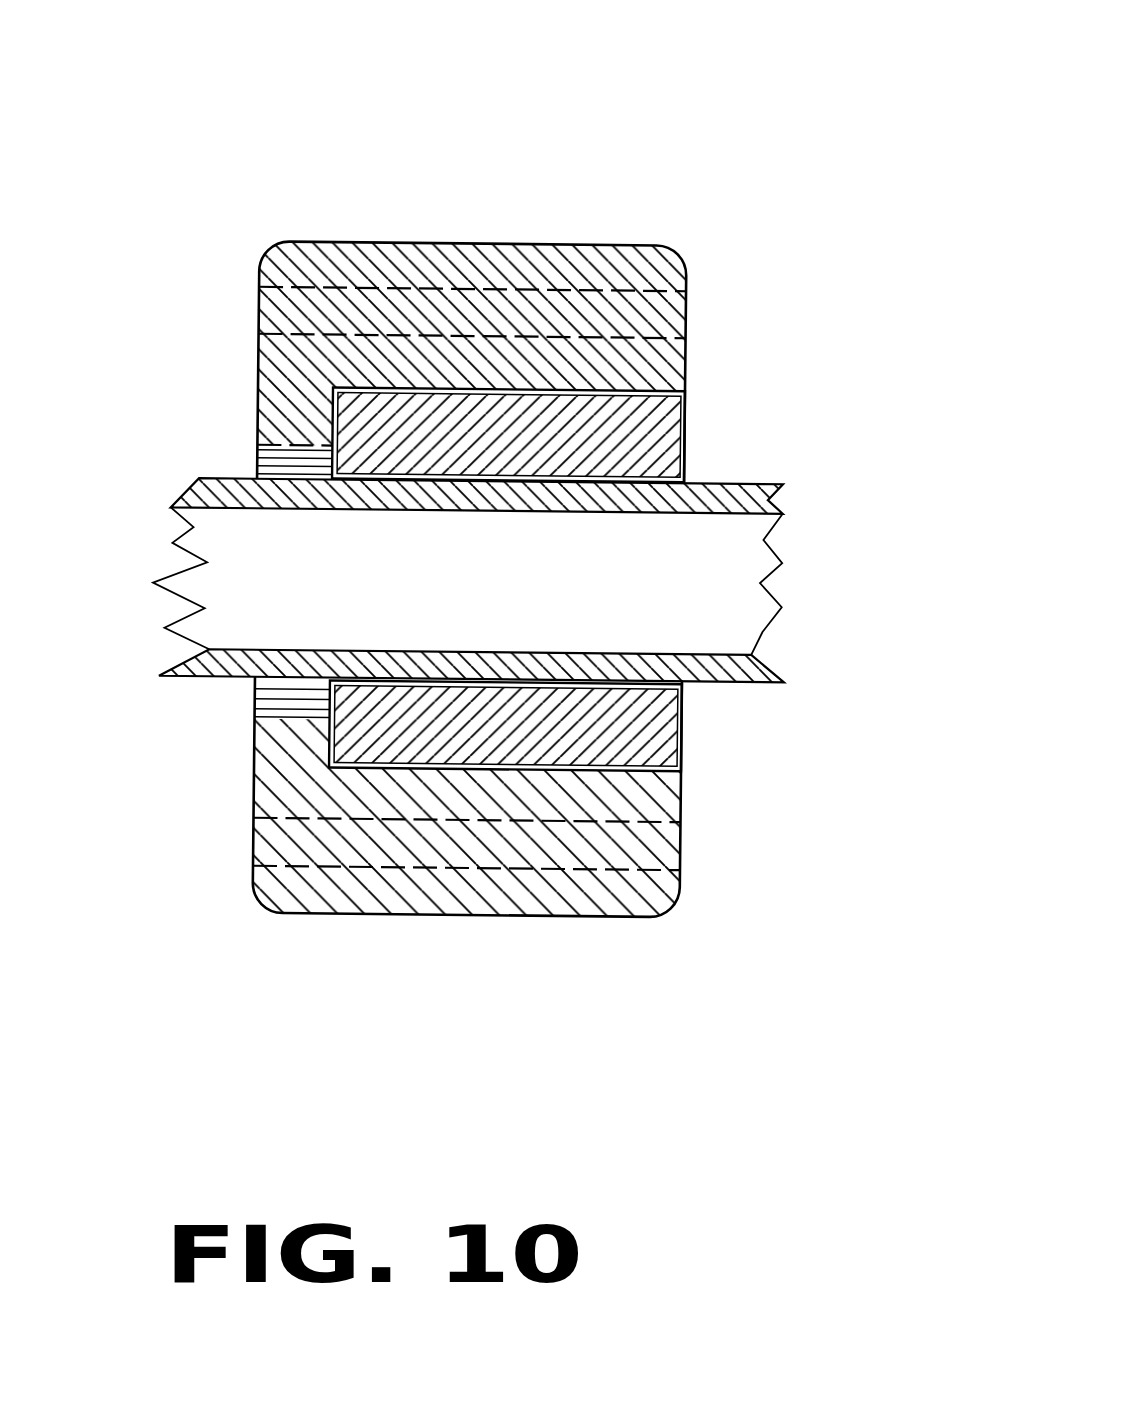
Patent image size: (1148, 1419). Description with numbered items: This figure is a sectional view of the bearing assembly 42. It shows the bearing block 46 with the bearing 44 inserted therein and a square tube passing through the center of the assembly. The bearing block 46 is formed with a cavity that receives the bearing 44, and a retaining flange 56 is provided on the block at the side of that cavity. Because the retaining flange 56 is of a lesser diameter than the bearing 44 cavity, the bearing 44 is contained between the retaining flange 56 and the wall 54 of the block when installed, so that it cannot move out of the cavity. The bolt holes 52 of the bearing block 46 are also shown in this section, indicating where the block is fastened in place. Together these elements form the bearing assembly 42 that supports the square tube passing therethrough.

The bearing assembly 42 is at (504, 509).
The bearing 44 is at (652, 448).
The bearing block 46 is at (602, 243).
The bolt holes 52 is at (305, 289).
The wall 54 is at (683, 806).
The retaining flange 56 is at (315, 732).